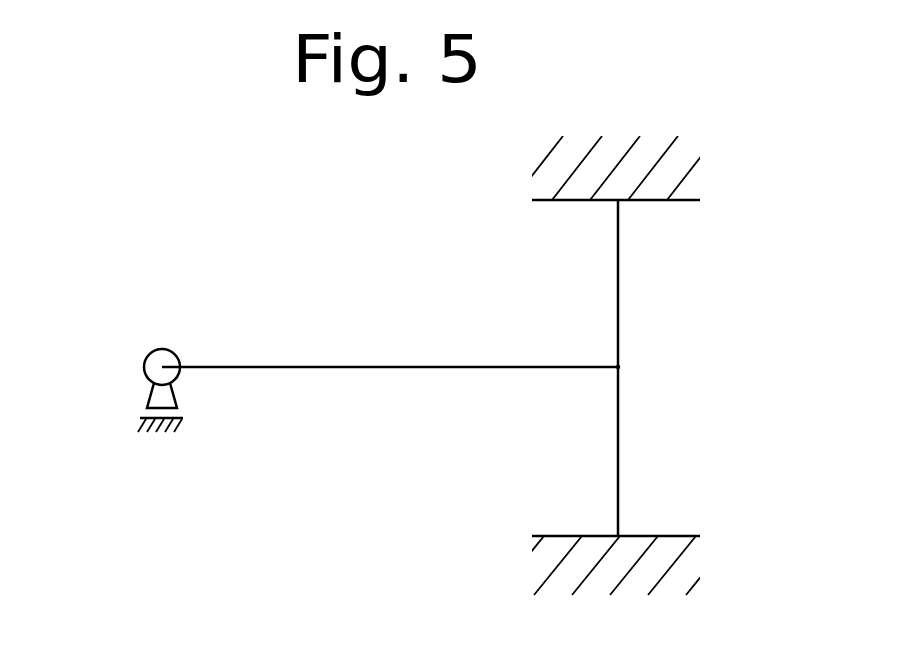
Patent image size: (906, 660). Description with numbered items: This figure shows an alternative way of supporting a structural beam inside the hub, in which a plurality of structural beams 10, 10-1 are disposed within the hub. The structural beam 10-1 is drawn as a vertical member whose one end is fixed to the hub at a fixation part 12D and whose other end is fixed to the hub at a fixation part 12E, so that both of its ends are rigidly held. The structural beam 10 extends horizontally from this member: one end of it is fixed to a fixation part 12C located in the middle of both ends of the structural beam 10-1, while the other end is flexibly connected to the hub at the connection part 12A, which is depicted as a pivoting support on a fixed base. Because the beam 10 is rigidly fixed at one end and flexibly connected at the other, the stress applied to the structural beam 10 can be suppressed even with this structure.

The structural beam 10 is at (390, 367).
The structural beam 10-1 is at (618, 313).
The connection part 12A is at (147, 332).
The fixation part 12C is at (653, 380).
The fixation part 12D is at (660, 213).
The fixation part 12E is at (663, 522).